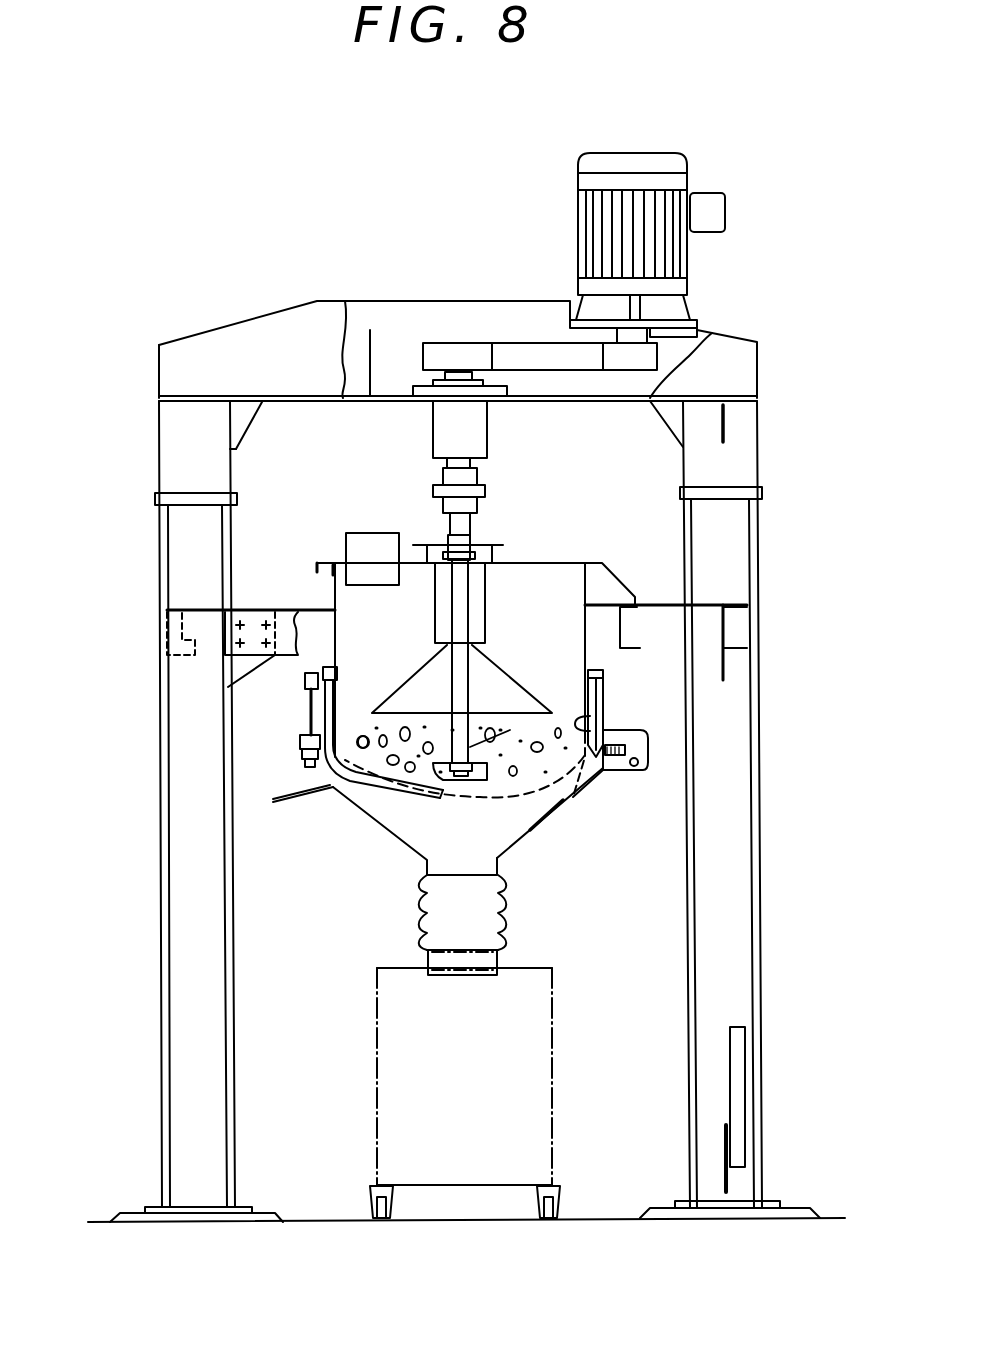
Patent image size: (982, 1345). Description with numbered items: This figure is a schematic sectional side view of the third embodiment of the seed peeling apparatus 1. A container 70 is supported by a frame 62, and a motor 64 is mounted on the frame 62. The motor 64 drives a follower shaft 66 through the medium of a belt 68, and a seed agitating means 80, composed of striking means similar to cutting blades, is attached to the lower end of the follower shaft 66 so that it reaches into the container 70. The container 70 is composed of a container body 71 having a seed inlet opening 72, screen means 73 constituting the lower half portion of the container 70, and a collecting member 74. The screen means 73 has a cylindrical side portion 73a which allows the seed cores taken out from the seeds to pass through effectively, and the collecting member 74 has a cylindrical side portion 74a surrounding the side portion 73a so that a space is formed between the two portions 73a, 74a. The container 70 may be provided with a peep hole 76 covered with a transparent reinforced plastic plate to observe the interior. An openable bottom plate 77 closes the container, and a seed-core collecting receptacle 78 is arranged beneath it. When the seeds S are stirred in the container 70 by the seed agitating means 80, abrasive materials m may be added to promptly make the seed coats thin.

The seed peeling apparatus 1 is at (300, 275).
The frame 62 is at (740, 773).
The motor 64 is at (672, 258).
The follower shaft 66 is at (455, 355).
The belt 68 is at (540, 355).
The container 70 is at (333, 808).
The container body 71 is at (532, 563).
The seed inlet opening 72 is at (370, 545).
The screen means 73 is at (550, 792).
The cylindrical side portion 73a is at (600, 730).
The collecting member 74 is at (507, 856).
The cylindrical side portion 74a is at (603, 703).
The peep hole 76 is at (303, 705).
The openable bottom plate 77 is at (460, 870).
The seed-core collecting receptacle 78 is at (535, 1100).
The seed agitating means 80 is at (383, 765).
The seeds S is at (357, 743).
The abrasive materials m is at (457, 790).